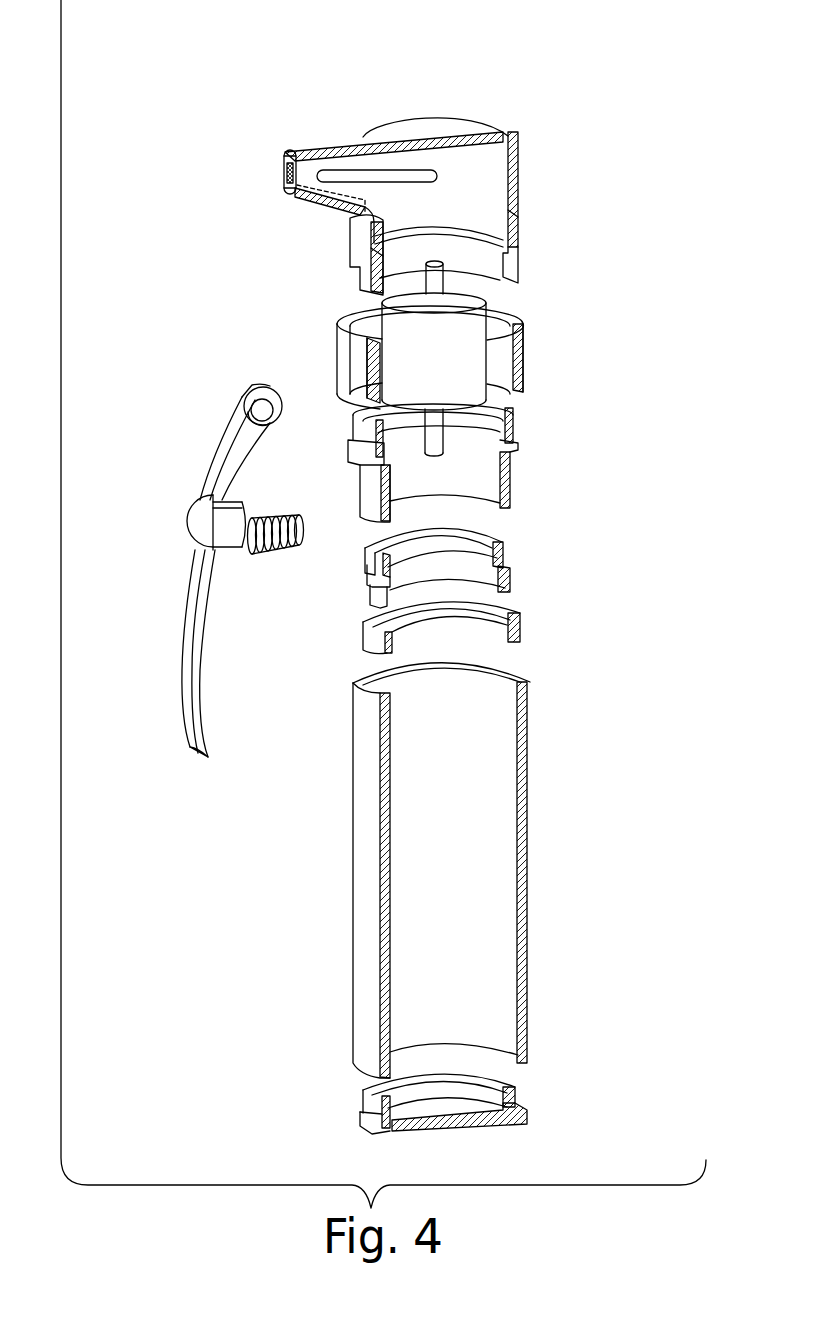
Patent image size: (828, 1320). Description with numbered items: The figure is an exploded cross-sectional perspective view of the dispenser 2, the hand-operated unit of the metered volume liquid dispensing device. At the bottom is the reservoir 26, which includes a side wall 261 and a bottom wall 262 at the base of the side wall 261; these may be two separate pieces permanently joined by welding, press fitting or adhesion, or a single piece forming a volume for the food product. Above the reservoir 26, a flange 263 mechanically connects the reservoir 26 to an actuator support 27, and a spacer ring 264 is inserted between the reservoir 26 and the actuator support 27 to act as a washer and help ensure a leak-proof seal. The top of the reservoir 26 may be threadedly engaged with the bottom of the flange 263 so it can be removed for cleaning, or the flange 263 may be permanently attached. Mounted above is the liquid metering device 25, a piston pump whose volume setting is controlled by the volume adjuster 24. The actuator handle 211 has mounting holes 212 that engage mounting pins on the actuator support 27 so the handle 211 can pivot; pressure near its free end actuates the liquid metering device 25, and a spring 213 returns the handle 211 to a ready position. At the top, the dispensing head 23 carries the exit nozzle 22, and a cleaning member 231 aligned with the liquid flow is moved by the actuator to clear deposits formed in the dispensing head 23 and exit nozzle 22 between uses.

The dispenser 2 is at (203, 92).
The exit nozzle 22 is at (283, 176).
The dispensing head 23 is at (455, 118).
The cleaning member 231 is at (356, 168).
The volume adjuster 24 is at (546, 354).
The liquid metering device 25 is at (448, 365).
The reservoir 26 is at (580, 736).
The actuator support 27 is at (510, 465).
The actuator handle 211 is at (195, 738).
The mounting holes 212 is at (243, 393).
The spring 213 is at (268, 557).
The side wall 261 is at (474, 930).
The bottom wall 262 is at (378, 1115).
The flange 263 is at (510, 555).
The spacer ring 264 is at (515, 625).